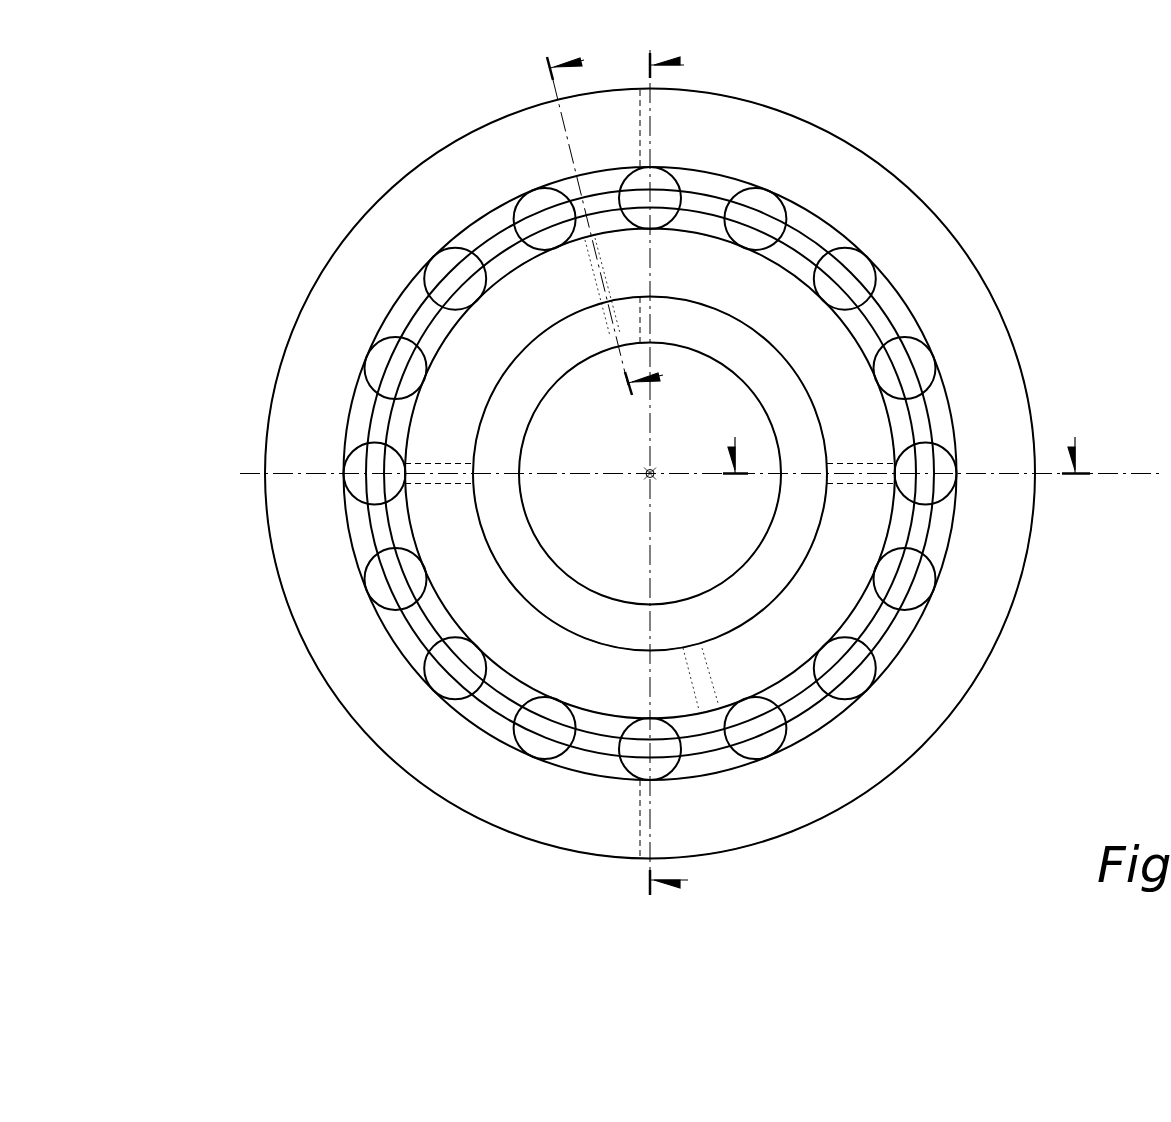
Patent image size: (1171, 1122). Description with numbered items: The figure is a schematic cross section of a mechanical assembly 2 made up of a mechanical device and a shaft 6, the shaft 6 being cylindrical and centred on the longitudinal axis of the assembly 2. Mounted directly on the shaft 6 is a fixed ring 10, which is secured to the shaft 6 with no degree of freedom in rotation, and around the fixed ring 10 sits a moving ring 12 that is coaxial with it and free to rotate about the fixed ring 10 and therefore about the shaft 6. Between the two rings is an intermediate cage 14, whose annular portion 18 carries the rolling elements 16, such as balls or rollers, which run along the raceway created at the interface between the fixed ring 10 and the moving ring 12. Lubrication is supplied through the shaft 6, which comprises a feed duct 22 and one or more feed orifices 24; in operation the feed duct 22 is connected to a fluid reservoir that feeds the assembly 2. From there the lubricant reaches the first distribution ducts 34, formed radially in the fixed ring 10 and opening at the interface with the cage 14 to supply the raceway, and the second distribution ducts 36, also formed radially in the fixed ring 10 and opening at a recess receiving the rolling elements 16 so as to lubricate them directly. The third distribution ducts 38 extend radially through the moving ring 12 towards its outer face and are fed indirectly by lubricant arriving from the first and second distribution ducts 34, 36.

The mechanical assembly 2 is at (1030, 174).
The shaft 6 is at (752, 363).
The fixed ring 10 is at (547, 658).
The moving ring 12 is at (360, 278).
The intermediate cage 14 is at (557, 505).
The rolling elements 16 is at (357, 498).
The annular portion 18 is at (377, 587).
The feed duct 22 is at (730, 532).
The feed orifices 24 is at (660, 320).
The first distribution ducts 34 is at (848, 463).
The second distribution ducts 36 is at (588, 282).
The third distribution ducts 38 is at (660, 138).